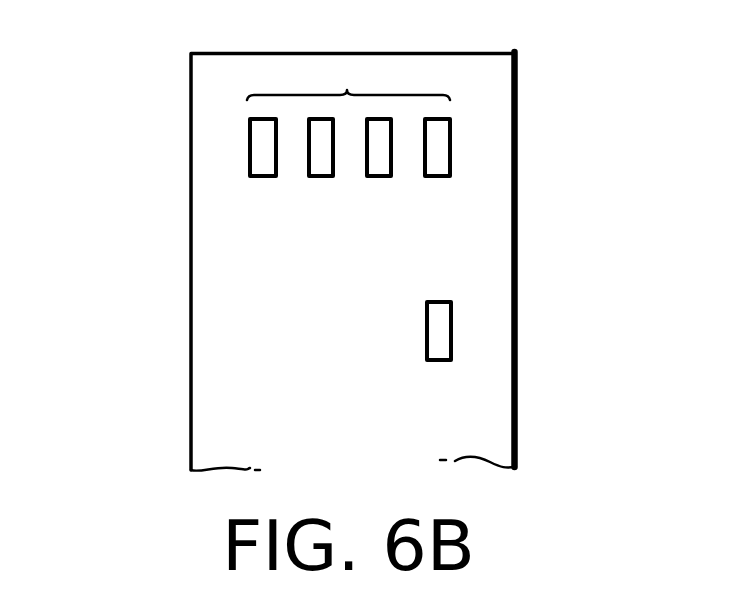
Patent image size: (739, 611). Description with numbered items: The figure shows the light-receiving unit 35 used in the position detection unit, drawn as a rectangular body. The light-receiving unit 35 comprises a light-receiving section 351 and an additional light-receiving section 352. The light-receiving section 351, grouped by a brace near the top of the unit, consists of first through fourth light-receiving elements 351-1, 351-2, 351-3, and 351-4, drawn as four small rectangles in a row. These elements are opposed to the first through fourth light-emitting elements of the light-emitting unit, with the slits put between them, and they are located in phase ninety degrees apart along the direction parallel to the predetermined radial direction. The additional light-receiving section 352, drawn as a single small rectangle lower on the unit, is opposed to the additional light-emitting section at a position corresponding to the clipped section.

The light-receiving unit 35 is at (518, 418).
The light-receiving section 351 is at (346, 90).
The first light-receiving element 351-1 is at (438, 178).
The second light-receiving element 351-2 is at (377, 178).
The third light-receiving element 351-3 is at (315, 178).
The fourth light-receiving element 351-4 is at (257, 178).
The additional light-receiving section 352 is at (453, 332).